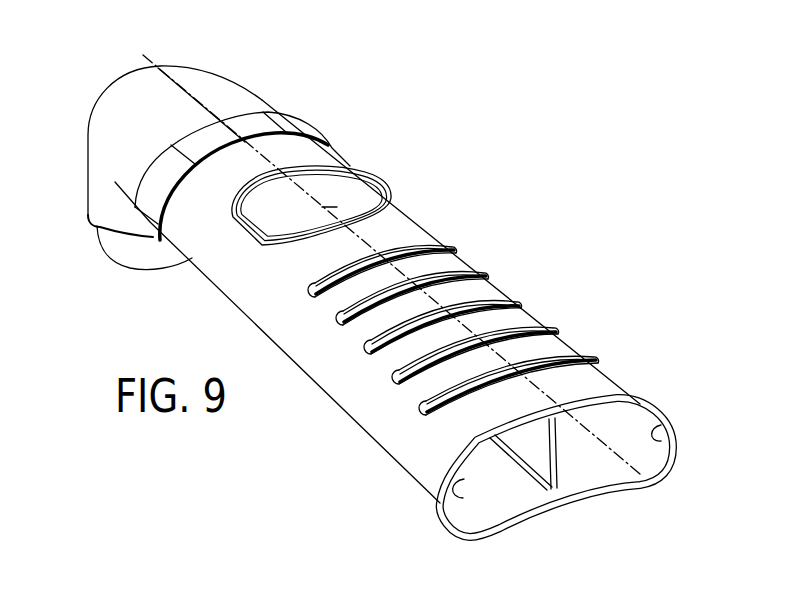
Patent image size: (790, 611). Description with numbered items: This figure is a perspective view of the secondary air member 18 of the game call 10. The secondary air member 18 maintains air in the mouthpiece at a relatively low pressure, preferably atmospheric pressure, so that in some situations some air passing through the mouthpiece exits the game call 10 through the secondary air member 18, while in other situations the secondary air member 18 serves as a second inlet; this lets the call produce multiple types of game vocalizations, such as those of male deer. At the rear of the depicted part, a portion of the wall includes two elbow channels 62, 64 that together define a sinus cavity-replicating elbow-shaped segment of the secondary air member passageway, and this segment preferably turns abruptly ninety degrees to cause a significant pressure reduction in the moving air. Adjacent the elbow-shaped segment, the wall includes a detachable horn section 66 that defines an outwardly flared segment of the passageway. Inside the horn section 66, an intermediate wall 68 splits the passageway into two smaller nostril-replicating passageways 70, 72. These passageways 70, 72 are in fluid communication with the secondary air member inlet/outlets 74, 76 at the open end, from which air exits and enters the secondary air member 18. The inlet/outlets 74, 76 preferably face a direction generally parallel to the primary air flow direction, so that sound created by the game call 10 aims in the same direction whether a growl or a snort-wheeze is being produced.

The game call 10 is at (130, 43).
The secondary air member 18 is at (502, 123).
The elbow channel 62 is at (88, 182).
The elbow channel 64 is at (267, 93).
The detachable horn section 66 is at (463, 260).
The intermediate wall 68 is at (556, 450).
The nostril-replicating passageway 70 is at (484, 497).
The nostril-replicating passageway 72 is at (606, 462).
The secondary air member inlet/outlet 74 is at (455, 490).
The secondary air member inlet/outlet 76 is at (656, 431).